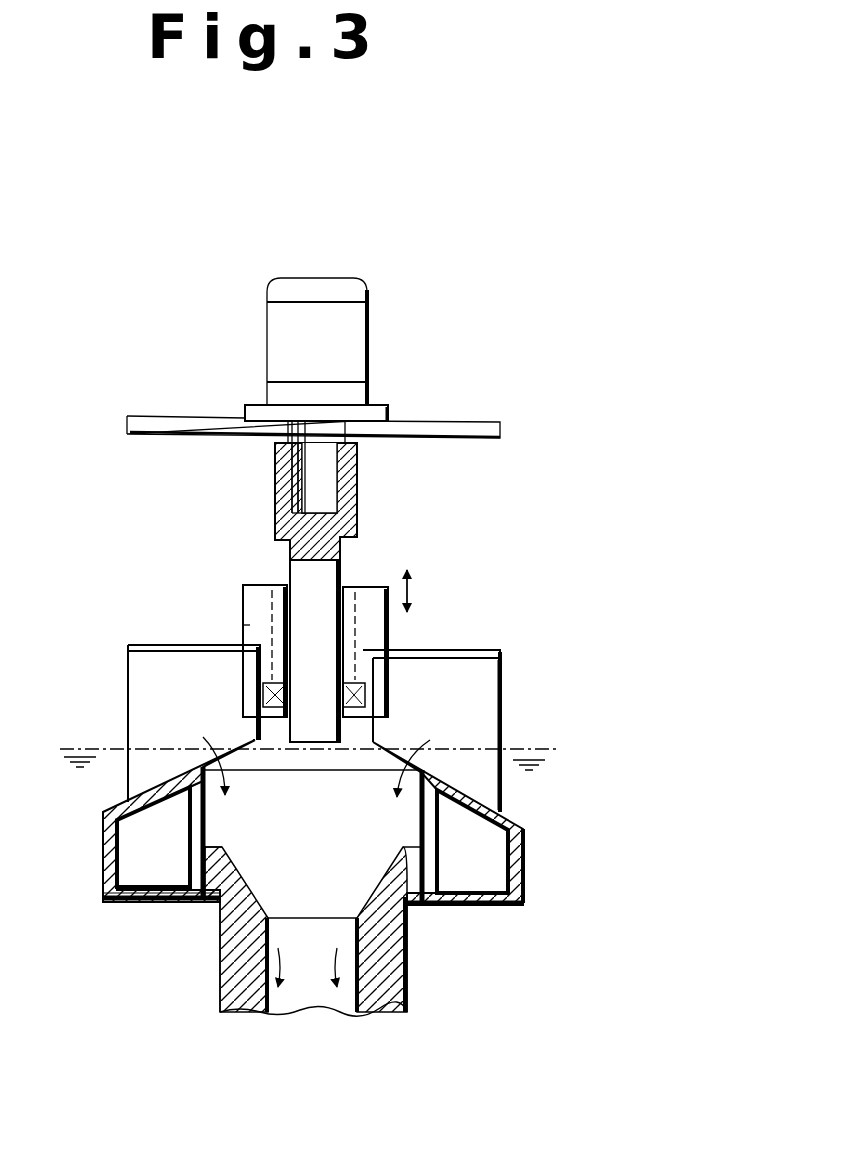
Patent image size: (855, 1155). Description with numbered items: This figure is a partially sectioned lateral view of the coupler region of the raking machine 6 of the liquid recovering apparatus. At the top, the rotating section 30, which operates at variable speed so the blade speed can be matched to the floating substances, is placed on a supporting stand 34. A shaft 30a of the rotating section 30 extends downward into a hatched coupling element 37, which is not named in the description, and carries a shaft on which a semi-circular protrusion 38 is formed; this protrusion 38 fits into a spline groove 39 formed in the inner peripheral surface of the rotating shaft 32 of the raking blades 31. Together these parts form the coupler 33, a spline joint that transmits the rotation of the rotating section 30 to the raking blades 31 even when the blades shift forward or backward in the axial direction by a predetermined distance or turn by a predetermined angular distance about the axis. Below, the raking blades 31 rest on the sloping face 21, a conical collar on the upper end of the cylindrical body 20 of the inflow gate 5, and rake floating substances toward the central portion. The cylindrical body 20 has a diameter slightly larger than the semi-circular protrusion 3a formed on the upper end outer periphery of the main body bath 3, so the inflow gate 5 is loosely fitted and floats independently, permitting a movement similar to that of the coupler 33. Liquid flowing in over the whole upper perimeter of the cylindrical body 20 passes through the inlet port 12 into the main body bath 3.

The rotating section 30 is at (323, 285).
The shaft of the rotating section 30a is at (312, 477).
The supporting stand 34 is at (462, 427).
The coupling 37 is at (353, 507).
The rotating shaft 32 is at (260, 592).
The coupler 33 is at (236, 605).
The semi-circular protrusion 38 is at (270, 695).
The spline groove 39 is at (250, 630).
The raking machine 6 is at (508, 678).
The raking blades 31 is at (480, 735).
The sloping face 21 is at (515, 805).
The inflow gate 5 is at (525, 862).
The cylindrical body 20 is at (103, 858).
The inlet port 12 is at (140, 903).
The main body bath 3 is at (393, 988).
The semi-circular protrusion 3a is at (215, 897).